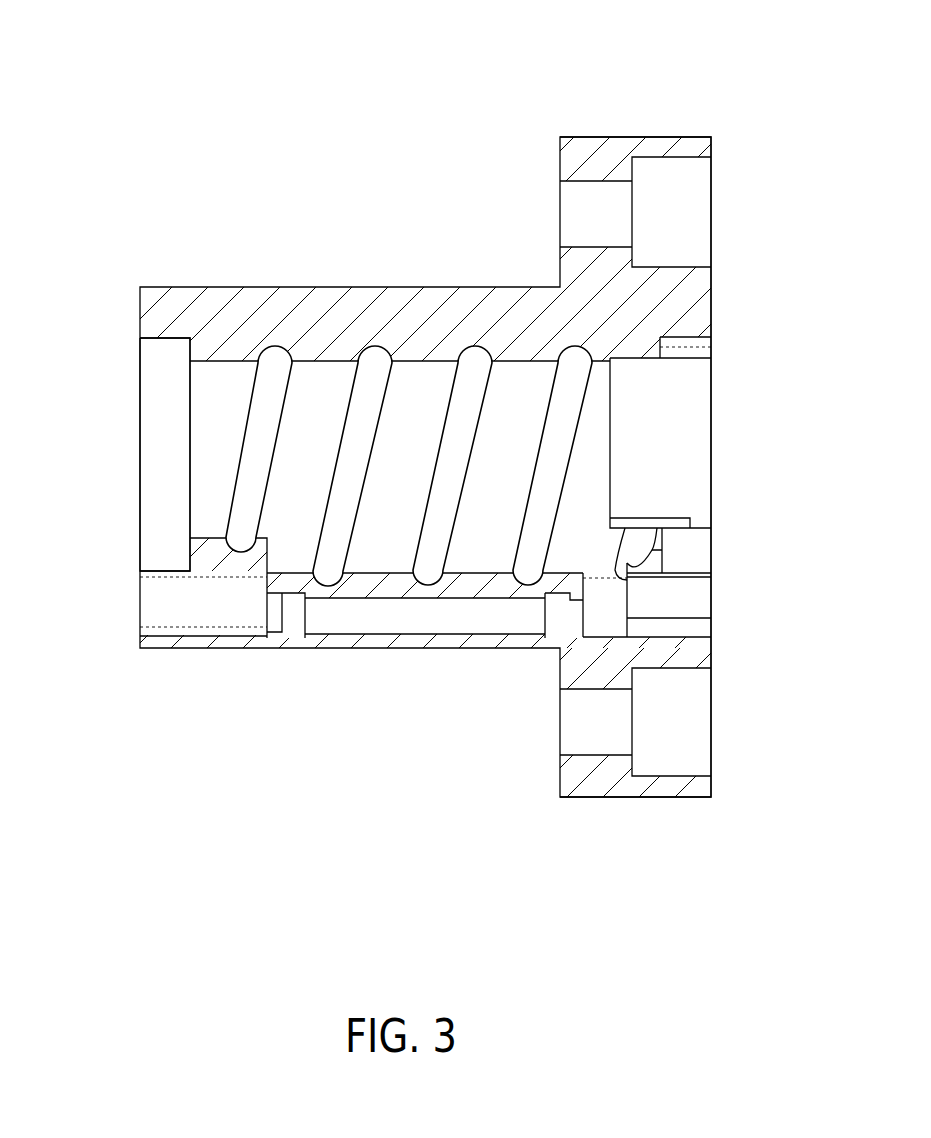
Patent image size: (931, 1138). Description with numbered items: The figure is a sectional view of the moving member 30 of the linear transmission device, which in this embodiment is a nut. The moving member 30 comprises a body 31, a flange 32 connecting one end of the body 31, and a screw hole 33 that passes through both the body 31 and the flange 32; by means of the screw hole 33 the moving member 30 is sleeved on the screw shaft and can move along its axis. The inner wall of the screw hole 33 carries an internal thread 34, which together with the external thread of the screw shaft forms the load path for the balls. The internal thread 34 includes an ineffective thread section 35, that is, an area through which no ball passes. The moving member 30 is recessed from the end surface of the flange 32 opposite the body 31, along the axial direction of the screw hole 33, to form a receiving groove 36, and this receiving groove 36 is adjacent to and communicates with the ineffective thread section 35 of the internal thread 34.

The moving member 30 is at (582, 60).
The body 31 is at (430, 290).
The flange 32 is at (581, 145).
The screw hole 33 is at (186, 472).
The internal thread 34 is at (247, 400).
The ineffective thread section 35 is at (640, 552).
The receiving groove 36 is at (690, 430).